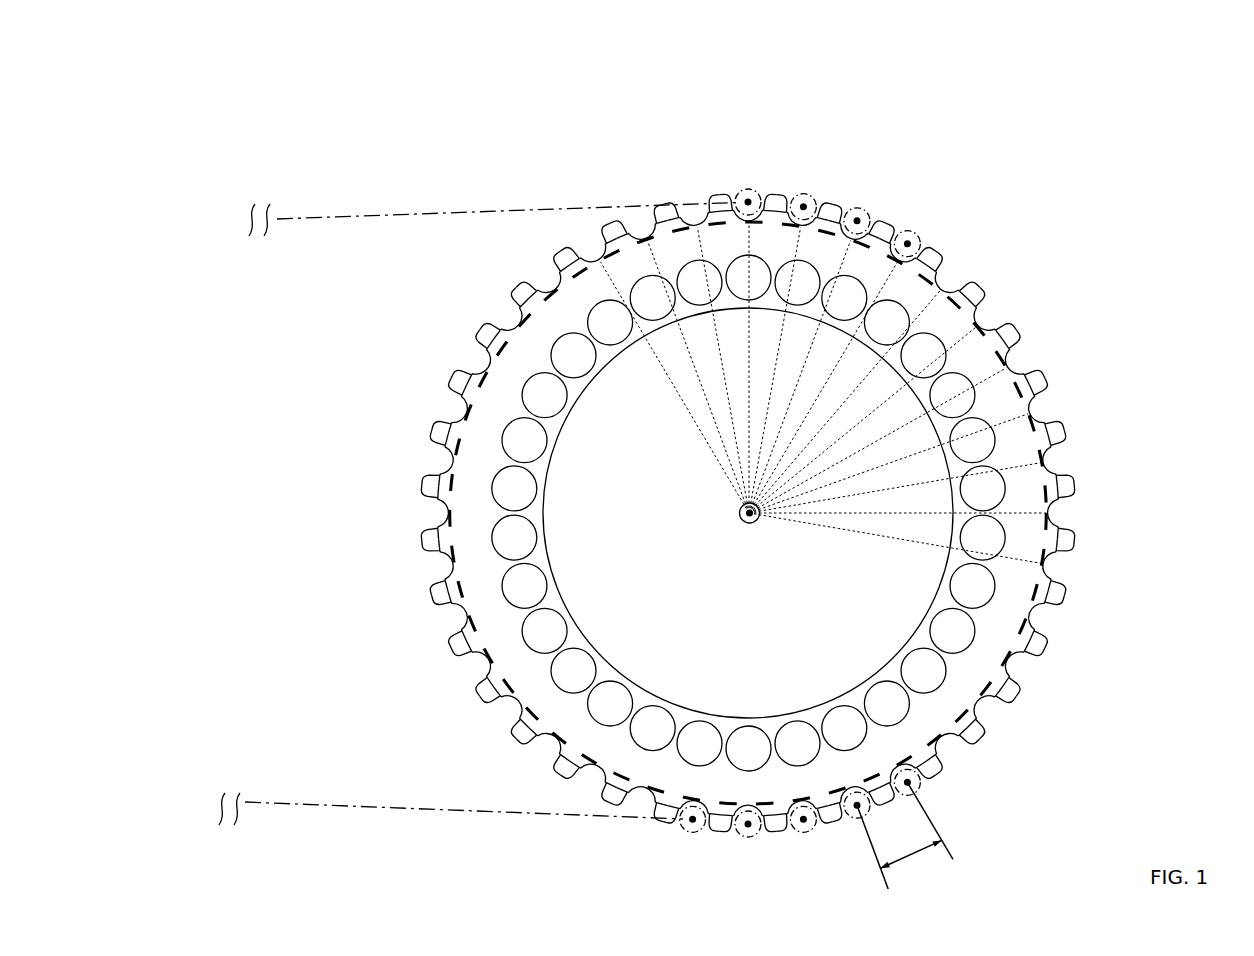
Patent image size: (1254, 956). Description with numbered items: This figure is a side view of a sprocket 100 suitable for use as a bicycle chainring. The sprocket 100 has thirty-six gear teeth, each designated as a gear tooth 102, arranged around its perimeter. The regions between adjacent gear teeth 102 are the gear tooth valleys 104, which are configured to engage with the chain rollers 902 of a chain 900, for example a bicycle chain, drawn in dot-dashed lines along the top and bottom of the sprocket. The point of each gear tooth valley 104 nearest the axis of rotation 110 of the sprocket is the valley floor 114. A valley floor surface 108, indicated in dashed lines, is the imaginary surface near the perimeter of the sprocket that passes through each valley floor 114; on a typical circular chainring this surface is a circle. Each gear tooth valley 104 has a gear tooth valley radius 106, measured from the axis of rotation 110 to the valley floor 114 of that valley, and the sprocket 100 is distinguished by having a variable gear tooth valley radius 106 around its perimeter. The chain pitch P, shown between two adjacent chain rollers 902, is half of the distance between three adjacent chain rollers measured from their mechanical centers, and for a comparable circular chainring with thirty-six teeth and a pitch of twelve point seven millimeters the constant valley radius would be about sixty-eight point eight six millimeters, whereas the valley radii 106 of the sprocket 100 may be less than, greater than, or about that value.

The sprocket 100 is at (457, 137).
The gear tooth 102 is at (443, 430).
The gear tooth valley 104 is at (498, 311).
The valley floor 114 is at (455, 461).
The gear tooth valley radius 106 is at (752, 413).
The valley floor surface 108 is at (998, 346).
The axis of rotation 110 is at (748, 519).
The chain 900 is at (478, 212).
The chain roller 902 is at (760, 191).
The chain pitch P is at (905, 835).